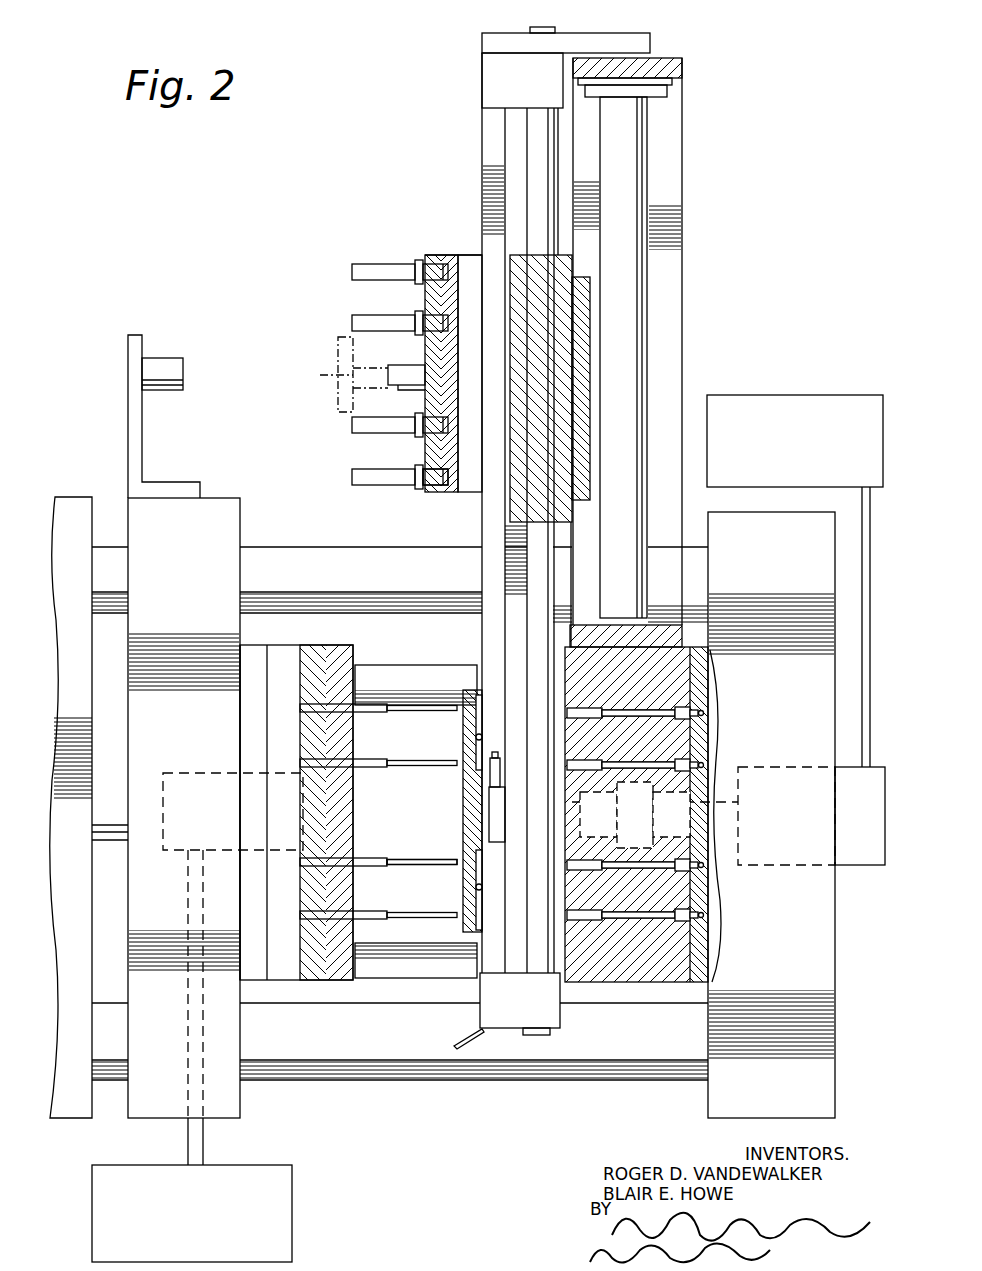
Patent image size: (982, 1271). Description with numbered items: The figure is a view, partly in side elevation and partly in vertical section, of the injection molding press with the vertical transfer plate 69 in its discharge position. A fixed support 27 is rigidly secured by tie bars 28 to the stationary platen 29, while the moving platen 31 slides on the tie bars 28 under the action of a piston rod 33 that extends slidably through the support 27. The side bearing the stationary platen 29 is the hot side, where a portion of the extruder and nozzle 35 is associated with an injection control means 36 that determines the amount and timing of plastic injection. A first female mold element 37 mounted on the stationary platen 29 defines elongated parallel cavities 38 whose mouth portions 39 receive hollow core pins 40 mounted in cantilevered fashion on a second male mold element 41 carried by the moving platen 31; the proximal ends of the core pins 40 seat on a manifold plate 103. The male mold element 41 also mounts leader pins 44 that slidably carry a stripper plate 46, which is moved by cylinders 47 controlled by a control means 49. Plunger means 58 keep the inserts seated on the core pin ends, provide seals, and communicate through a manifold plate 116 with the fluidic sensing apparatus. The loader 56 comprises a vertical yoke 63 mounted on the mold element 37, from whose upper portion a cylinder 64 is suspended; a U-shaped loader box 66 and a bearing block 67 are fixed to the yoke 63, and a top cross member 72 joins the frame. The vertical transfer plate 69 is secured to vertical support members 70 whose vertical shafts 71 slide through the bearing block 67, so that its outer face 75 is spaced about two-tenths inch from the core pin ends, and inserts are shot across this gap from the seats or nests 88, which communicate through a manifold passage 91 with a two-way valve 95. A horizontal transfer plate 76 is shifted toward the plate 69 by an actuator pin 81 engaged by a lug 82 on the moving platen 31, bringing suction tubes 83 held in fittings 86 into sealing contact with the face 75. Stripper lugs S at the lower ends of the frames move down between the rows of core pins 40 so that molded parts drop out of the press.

The fixed support 27 is at (64, 520).
The tie bars 28 is at (330, 553).
The stationary platen 29 is at (835, 1046).
The moving platen 31 is at (240, 1100).
The piston rod 33 is at (105, 842).
The extruder and nozzle 35 is at (784, 767).
The injection control means 36 is at (762, 395).
The first (female) mold element 37 is at (633, 982).
The cavities 38 is at (600, 710).
The mouth portions 39 is at (575, 710).
The core pins 40 is at (370, 712).
The second (male) mold element 41 is at (285, 975).
The leader pins 44 is at (395, 685).
The stripper plate 46 is at (340, 975).
The cylinders 47 is at (197, 773).
The control means 49 is at (270, 1165).
The loader 56 is at (413, 210).
The plunger means 58 is at (682, 708).
The vertical yoke 63 is at (682, 214).
The cylinder 64 is at (645, 162).
The loader box 66 is at (425, 302).
The bearing block 67 is at (570, 337).
The vertical transfer plate 69 is at (465, 810).
The vertical support members 70 is at (482, 136).
The vertical shafts 71 is at (540, 118).
The top cross plate 72 is at (592, 45).
The outer face 75 is at (470, 930).
The horizontal transfer plate 76 is at (455, 494).
The actuator pin 81 is at (405, 366).
The lug 82 is at (180, 358).
The suction tubes 83 is at (380, 270).
The fittings 86 is at (430, 488).
The seats or nests 88 is at (458, 866).
The manifold passage 91 is at (482, 702).
The two-way valve 95 is at (488, 834).
The manifold plate 103 is at (240, 722).
The manifold plate 116 is at (706, 974).
The stripper lugs S is at (455, 1040).